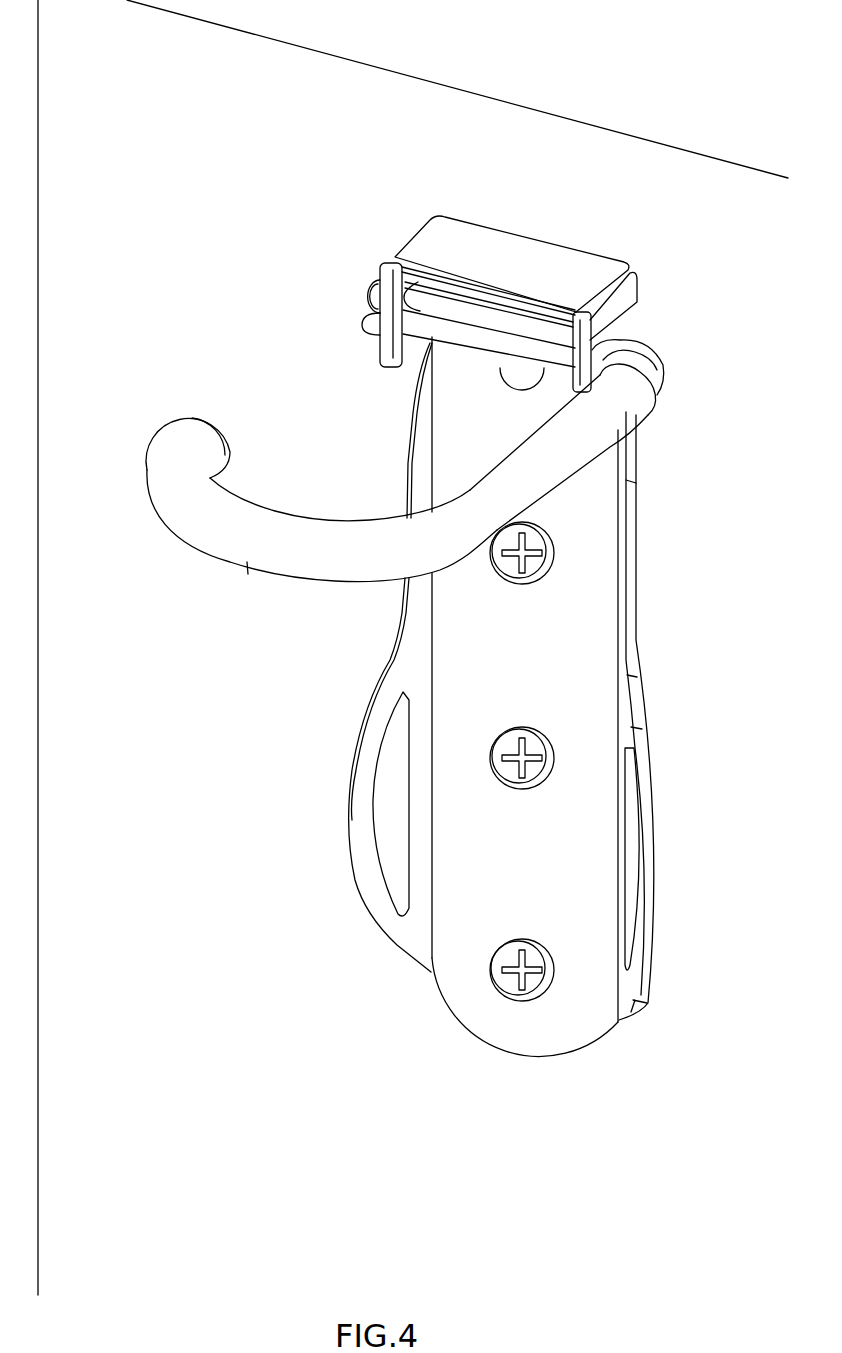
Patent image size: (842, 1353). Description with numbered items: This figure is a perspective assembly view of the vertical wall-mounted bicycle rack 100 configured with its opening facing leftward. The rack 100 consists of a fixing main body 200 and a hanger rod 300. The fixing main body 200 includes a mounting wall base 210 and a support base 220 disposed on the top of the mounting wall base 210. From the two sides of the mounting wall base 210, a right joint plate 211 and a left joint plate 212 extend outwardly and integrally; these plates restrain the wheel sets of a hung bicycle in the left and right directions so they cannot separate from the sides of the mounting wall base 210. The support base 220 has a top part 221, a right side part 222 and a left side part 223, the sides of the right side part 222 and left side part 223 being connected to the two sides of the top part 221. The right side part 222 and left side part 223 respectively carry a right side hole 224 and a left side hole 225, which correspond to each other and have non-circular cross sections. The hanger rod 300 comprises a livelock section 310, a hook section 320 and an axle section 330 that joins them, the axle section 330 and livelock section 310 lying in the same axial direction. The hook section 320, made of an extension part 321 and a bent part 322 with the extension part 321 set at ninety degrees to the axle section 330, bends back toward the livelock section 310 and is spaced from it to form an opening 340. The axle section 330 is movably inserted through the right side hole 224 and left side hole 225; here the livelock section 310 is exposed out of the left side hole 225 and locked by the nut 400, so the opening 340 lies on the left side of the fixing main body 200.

The vertical wall-mounted bicycle rack 100 is at (238, 765).
The fixing main body 200 is at (520, 1052).
The mounting wall base 210 is at (478, 1010).
The right joint plate 211 is at (647, 855).
The left joint plate 212 is at (363, 830).
The support base 220 is at (563, 258).
The top part 221 is at (449, 280).
The right side part 222 is at (567, 320).
The left side part 223 is at (387, 340).
The right side hole 224 is at (592, 348).
The left side hole 225 is at (382, 278).
The hanger rod 300 is at (597, 445).
The livelock section 310 is at (355, 291).
The hook section 320 is at (197, 542).
The extension part 321 is at (558, 480).
The bent part 322 is at (247, 562).
The axle section 330 is at (482, 328).
The opening 340 is at (243, 383).
The nut 400 is at (358, 296).